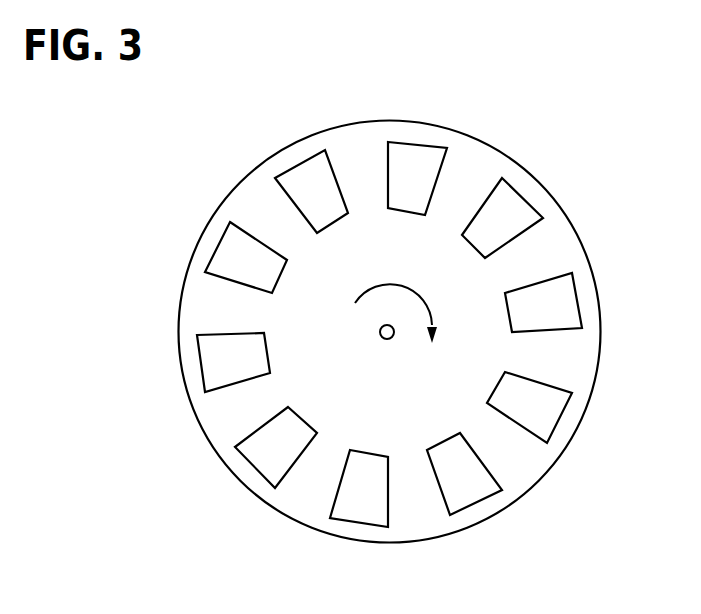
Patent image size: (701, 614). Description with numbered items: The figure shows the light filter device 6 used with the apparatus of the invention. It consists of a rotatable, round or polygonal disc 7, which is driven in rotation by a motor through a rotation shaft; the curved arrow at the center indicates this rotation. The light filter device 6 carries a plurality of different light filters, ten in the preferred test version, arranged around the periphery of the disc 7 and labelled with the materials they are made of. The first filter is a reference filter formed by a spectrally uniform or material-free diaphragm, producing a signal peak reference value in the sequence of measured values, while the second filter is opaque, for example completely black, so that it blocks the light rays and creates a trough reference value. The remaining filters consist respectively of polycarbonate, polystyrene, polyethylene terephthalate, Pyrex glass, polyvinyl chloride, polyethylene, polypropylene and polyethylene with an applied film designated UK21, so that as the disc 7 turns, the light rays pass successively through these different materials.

The light filter device 6 is at (236, 148).
The rotatable disc 7 is at (572, 365).